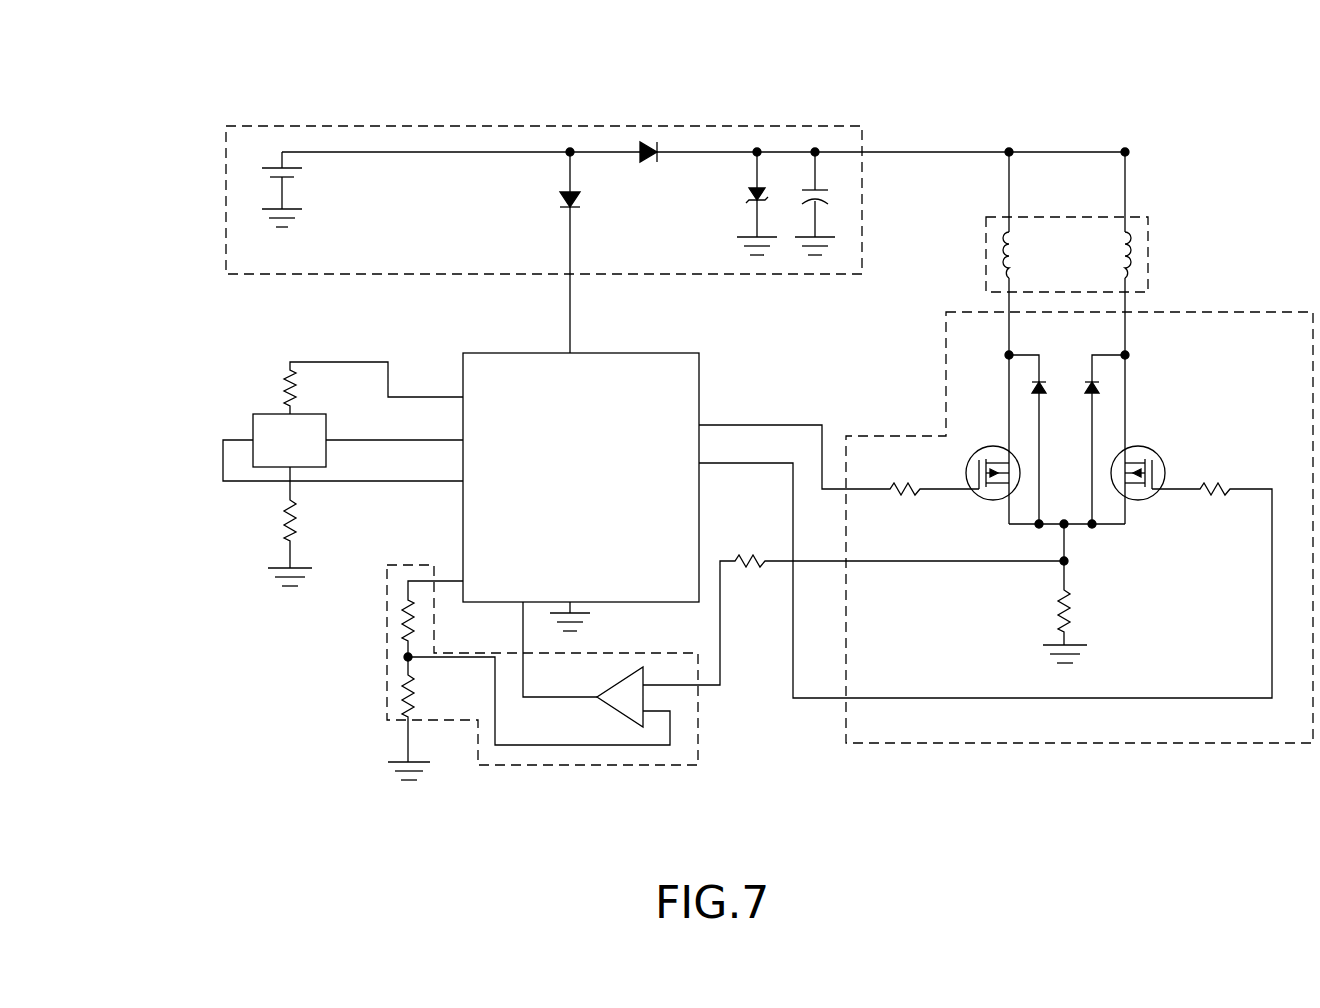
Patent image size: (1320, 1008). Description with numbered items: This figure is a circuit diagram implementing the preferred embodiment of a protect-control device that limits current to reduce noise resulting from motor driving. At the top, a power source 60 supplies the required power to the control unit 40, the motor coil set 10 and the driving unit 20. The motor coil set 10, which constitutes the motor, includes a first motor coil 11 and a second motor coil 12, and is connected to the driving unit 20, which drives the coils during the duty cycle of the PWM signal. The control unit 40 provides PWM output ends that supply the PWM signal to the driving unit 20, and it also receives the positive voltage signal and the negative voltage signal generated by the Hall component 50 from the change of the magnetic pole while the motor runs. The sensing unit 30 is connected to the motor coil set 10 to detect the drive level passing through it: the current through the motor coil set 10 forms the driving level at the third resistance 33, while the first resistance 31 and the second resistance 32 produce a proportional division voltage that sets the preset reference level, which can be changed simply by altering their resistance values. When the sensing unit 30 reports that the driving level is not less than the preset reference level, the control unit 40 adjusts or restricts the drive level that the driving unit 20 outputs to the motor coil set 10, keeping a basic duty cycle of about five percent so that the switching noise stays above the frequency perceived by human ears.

The motor coil set 10 is at (1071, 308).
The first motor coil 11 is at (1000, 250).
The second motor coil 12 is at (1135, 250).
The driving unit 20 is at (981, 546).
The sensing unit 30 is at (486, 665).
The first resistance 31 is at (407, 600).
The second resistance 32 is at (405, 697).
The third resistance 33 is at (1070, 615).
The control unit 40 is at (512, 353).
The Hall component 50 is at (253, 414).
The power source 60 is at (302, 126).